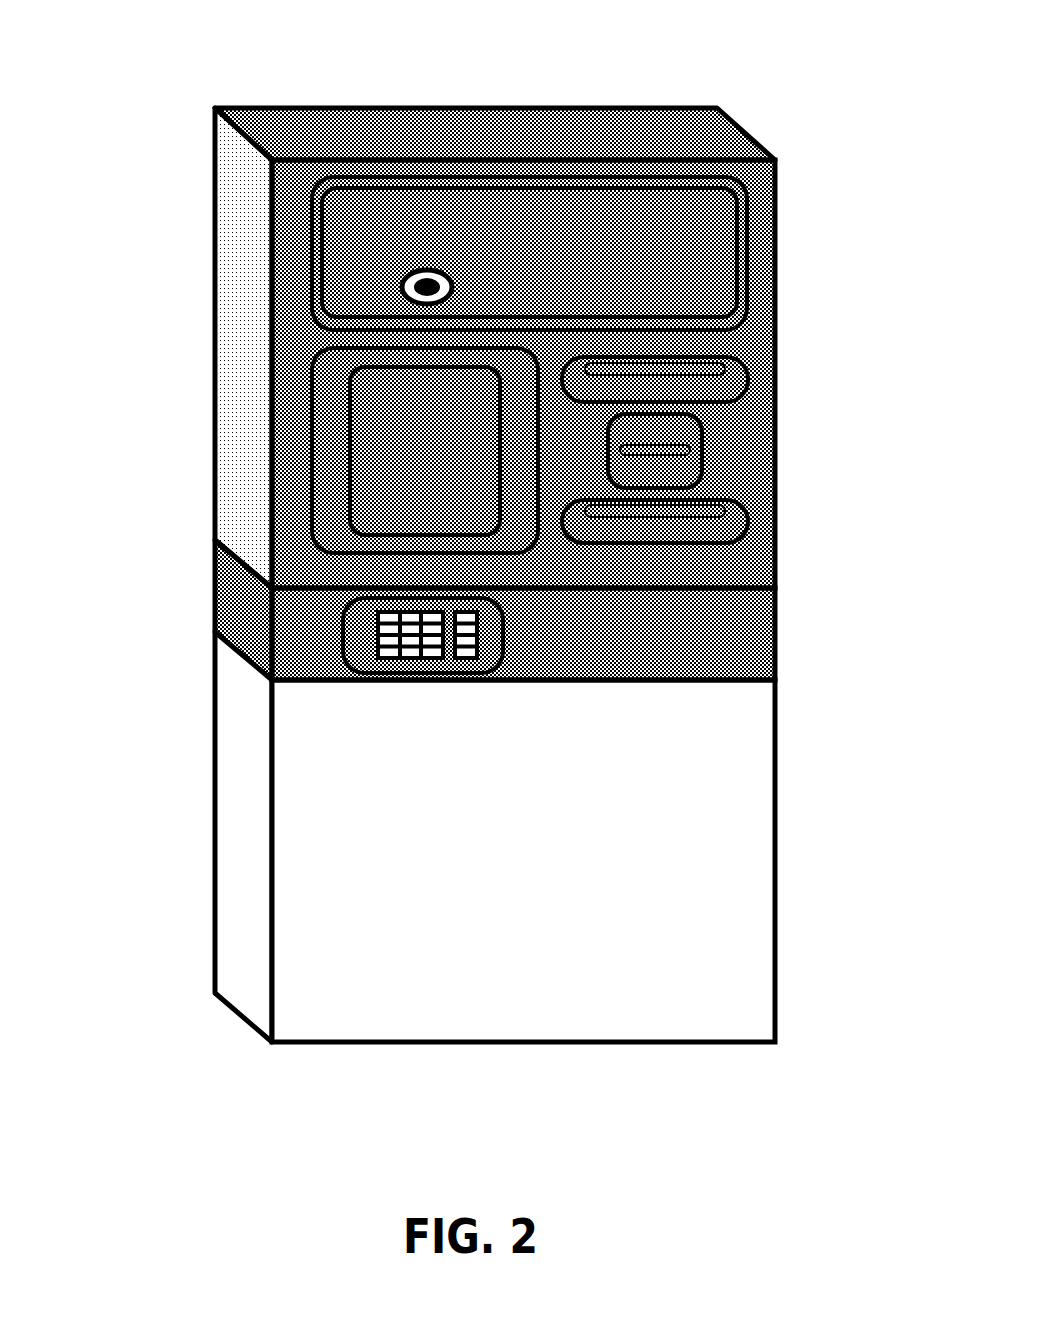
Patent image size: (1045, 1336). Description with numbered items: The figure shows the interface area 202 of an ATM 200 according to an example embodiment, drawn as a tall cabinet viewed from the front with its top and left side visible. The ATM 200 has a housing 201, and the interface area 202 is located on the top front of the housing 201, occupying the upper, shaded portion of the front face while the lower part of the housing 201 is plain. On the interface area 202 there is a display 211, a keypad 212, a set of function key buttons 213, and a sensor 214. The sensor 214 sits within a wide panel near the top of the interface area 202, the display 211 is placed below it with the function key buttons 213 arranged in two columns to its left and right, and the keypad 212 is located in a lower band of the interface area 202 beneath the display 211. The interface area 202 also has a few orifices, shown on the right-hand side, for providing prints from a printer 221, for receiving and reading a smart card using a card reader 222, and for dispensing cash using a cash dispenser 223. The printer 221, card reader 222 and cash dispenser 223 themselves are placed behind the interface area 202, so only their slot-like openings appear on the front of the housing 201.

The ATM 200 is at (488, 587).
The housing 201 is at (672, 1013).
The interface area 202 is at (288, 202).
The display 211 is at (353, 533).
The keypad 212 is at (418, 672).
The function key buttons 213 is at (323, 432).
The sensor 214 is at (370, 297).
The printer 221 is at (760, 362).
The card reader 222 is at (742, 445).
The cash dispenser 223 is at (753, 523).